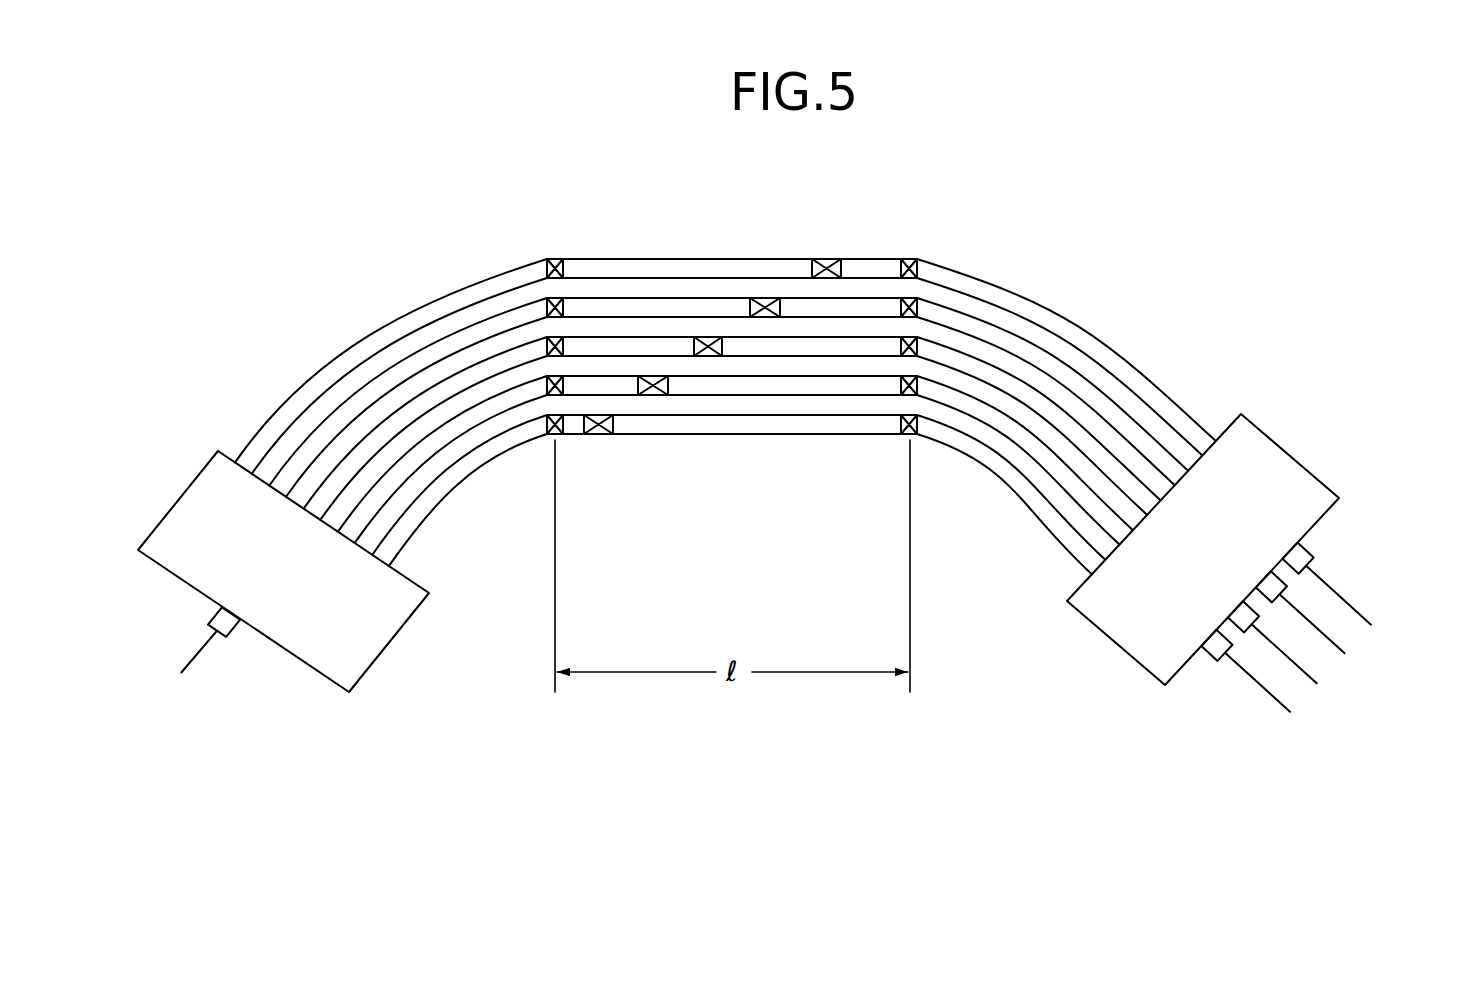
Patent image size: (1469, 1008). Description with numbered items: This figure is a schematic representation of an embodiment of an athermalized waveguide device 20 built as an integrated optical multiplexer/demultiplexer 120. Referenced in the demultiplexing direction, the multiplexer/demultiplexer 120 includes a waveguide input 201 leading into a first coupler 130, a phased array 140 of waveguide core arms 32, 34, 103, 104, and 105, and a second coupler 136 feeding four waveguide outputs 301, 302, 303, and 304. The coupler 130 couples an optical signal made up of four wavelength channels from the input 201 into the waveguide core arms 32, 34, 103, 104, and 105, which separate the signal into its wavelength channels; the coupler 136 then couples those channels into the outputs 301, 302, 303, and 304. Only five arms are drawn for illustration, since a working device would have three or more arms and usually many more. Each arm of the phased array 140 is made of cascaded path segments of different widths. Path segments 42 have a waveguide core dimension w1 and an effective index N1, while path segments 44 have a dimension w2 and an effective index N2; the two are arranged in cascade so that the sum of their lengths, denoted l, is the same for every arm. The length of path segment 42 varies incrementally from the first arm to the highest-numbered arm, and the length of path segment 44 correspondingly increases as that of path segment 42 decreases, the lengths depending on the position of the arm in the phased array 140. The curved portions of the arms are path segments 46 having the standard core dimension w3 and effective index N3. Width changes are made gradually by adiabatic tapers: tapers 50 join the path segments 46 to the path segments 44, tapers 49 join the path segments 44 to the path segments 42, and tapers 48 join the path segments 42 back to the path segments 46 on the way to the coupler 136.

The athermalized waveguide device 20 is at (347, 179).
The waveguide core arm 32 is at (537, 440).
The waveguide core arm 34 is at (500, 444).
The path segment 42 is at (885, 281).
The path segment 44 is at (574, 413).
The path segment 46 is at (420, 497).
The adiabatic taper 48 is at (918, 278).
The adiabatic taper 49 is at (612, 415).
The adiabatic taper 50 is at (547, 415).
The waveguide core arm 103 is at (461, 420).
The waveguide core arm 104 is at (433, 378).
The waveguide core arm 105 is at (387, 317).
The multiplexer/demultiplexer 120 is at (1207, 229).
The coupler 130 is at (288, 578).
The coupler 136 is at (1235, 552).
The phased array 140 is at (930, 201).
The waveguide input 201 is at (237, 643).
The waveguide output 301 is at (1232, 646).
The waveguide output 302 is at (1259, 616).
The waveguide output 303 is at (1286, 584).
The waveguide output 304 is at (1311, 555).